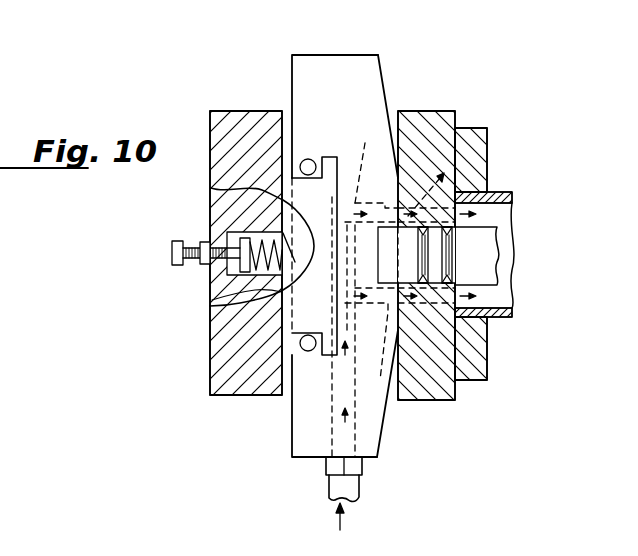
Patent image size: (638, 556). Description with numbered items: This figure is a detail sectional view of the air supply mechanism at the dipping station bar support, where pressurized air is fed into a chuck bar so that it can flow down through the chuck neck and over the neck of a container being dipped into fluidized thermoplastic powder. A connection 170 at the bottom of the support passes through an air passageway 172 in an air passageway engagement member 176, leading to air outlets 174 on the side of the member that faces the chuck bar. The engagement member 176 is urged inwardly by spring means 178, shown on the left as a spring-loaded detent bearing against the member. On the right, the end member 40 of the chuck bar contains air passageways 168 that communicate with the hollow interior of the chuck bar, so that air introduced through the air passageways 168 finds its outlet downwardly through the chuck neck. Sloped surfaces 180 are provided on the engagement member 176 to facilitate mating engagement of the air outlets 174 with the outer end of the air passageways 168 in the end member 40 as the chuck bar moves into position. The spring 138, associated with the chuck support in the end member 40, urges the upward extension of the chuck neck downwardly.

The end member 40 is at (438, 117).
The spring 138 is at (483, 265).
The air passageways 168 is at (422, 198).
The connection 170 is at (350, 490).
The air passageway 172 is at (362, 157).
The air outlets 174 is at (392, 416).
The air passageway engagement member 176 is at (316, 102).
The spring means 178 is at (233, 301).
The sloped surfaces 180 is at (384, 80).